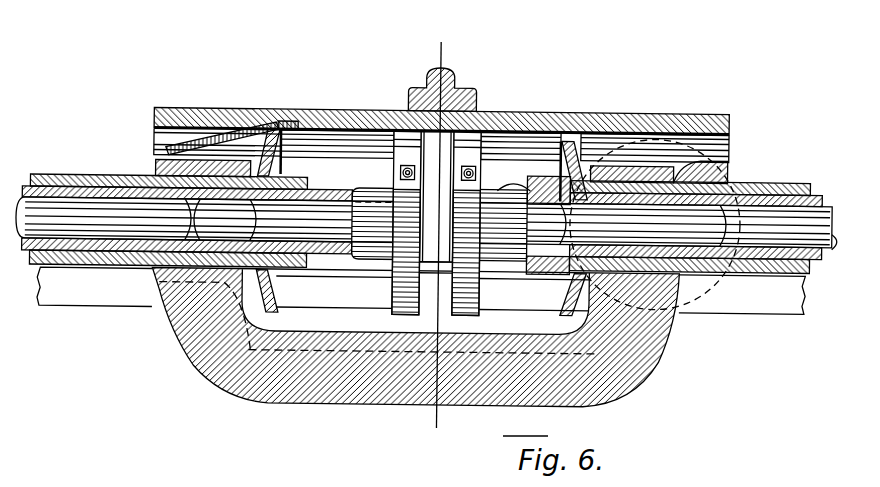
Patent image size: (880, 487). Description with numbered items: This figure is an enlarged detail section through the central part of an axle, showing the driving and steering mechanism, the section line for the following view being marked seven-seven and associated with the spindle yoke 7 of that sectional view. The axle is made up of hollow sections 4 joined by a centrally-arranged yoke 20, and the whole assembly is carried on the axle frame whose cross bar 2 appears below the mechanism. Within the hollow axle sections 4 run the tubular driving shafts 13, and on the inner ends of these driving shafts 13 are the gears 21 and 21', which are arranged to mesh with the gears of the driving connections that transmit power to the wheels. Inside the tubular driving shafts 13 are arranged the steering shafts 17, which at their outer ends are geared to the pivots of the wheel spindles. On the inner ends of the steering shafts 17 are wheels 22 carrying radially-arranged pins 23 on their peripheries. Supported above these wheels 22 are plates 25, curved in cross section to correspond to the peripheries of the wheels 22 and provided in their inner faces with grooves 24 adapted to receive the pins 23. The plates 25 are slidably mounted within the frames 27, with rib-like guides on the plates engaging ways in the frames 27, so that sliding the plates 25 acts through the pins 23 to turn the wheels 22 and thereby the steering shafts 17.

The cross bar 2 is at (768, 311).
The hollow axle section 4 is at (76, 177).
The spindle yoke 7 is at (448, 46).
The tubular driving shaft 13 is at (108, 195).
The steering shaft 17 is at (57, 210).
The yoke 20 is at (357, 404).
The gear 21 is at (508, 201).
The gear 21' is at (325, 199).
The wheel 22 is at (408, 147).
The pin 23 is at (401, 174).
The groove 24 is at (280, 122).
The plate 25 is at (650, 113).
The frame 27 is at (451, 90).